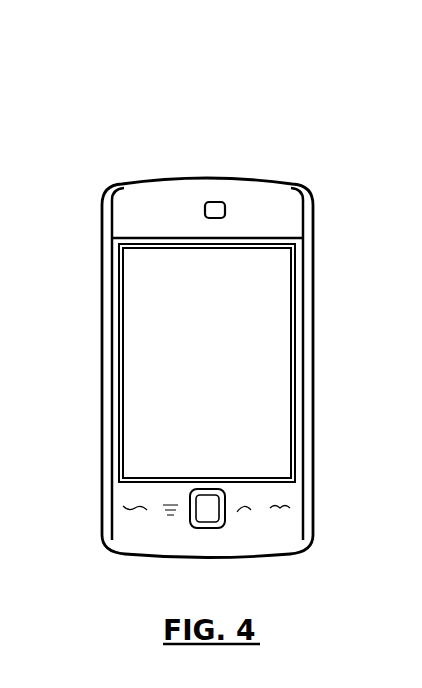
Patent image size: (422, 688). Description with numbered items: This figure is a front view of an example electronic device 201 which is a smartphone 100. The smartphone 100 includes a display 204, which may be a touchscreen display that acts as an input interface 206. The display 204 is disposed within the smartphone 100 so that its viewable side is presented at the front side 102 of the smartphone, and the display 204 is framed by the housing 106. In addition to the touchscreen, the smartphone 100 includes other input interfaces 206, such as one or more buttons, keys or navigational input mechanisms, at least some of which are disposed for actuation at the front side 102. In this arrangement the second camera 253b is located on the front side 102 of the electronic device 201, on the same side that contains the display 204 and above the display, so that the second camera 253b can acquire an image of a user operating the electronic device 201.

The smartphone 100 is at (181, 128).
The electronic device 201 is at (143, 153).
The housing 106 is at (316, 258).
The second camera 253b is at (205, 201).
The display 204 is at (120, 317).
The input interface 206 is at (120, 385).
The front side 102 is at (118, 493).